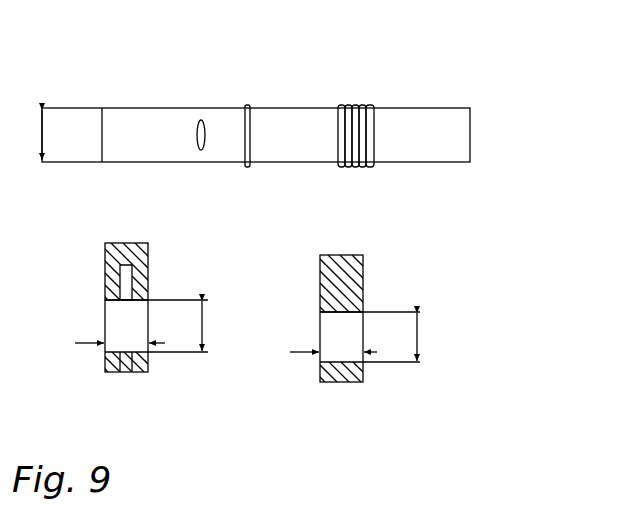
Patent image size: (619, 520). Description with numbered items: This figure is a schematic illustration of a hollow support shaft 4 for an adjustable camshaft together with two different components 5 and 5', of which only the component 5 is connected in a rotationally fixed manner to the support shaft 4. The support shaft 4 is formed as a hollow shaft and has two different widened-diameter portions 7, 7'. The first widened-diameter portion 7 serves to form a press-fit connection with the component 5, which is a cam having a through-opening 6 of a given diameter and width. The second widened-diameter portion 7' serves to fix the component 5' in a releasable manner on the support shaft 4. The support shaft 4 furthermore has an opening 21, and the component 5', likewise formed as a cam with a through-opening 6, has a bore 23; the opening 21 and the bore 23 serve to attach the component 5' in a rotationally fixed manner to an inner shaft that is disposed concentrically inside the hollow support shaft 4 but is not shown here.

The support shaft 4 is at (445, 98).
The opening 21 is at (200, 122).
The second widened-diameter portion 7' is at (251, 97).
The first widened-diameter portion 7 is at (359, 97).
The component 5' is at (129, 301).
The bore 23 is at (127, 277).
The through-opening 6 is at (113, 305).
The component 5 is at (359, 317).